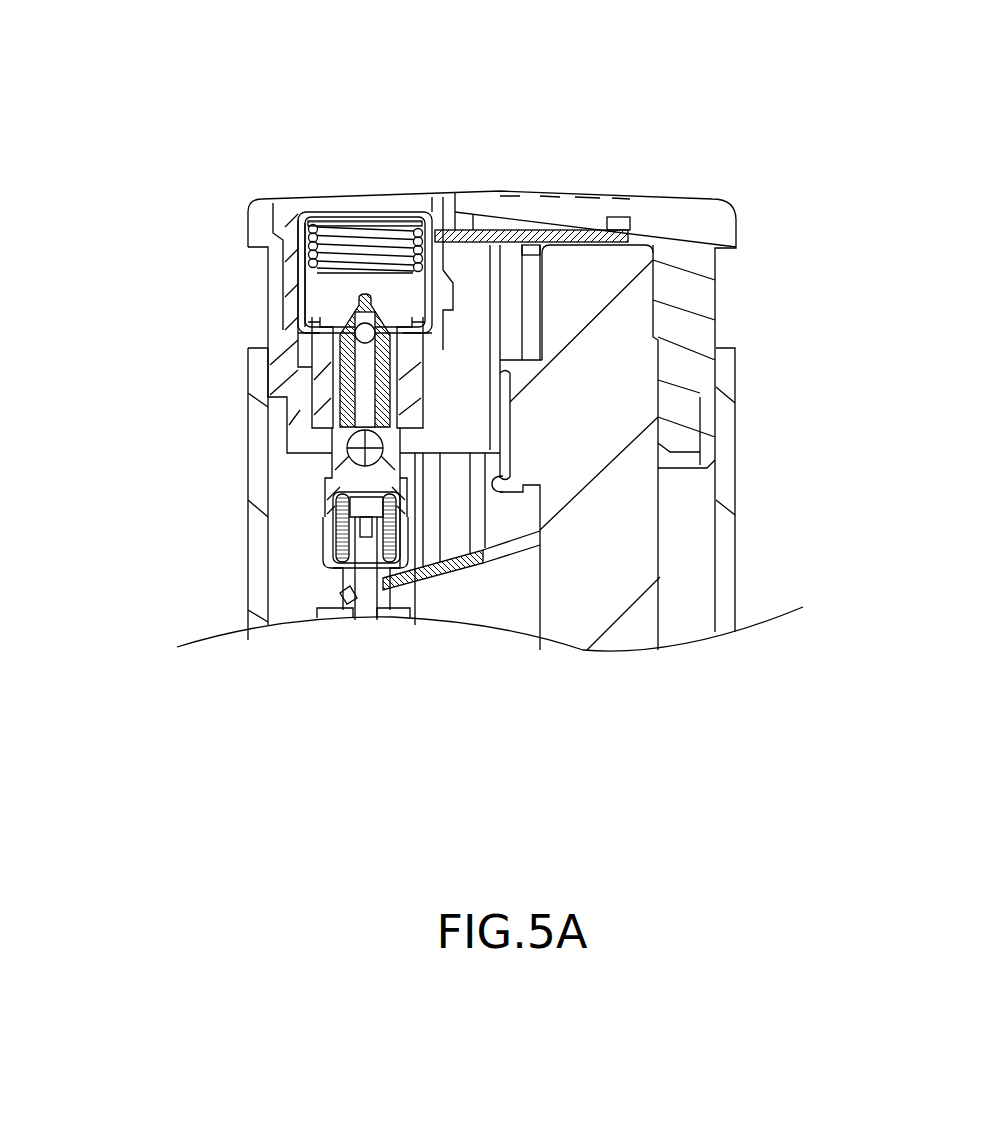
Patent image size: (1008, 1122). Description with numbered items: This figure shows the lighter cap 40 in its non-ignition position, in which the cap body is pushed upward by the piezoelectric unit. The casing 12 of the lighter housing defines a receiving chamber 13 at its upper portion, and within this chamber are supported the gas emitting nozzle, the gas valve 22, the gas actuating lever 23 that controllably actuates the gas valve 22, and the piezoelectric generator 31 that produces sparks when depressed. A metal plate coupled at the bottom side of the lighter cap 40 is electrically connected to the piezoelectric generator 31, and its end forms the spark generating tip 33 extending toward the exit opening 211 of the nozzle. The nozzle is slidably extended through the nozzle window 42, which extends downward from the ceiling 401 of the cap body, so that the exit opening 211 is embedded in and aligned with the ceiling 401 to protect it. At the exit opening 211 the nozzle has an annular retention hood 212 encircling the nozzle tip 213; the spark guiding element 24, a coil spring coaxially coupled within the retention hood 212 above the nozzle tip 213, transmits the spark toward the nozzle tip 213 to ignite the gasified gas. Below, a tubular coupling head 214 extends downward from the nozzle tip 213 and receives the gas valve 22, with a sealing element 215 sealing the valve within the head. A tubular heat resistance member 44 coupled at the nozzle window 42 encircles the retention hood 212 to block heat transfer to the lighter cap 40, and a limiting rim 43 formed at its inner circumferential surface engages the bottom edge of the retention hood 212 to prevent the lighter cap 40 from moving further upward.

The casing 12 is at (723, 552).
The receiving chamber 13 is at (683, 598).
The gas valve 22 is at (365, 578).
The gas actuating lever 23 is at (452, 577).
The spark guiding element 24 is at (355, 263).
The piezoelectric generator 31 is at (613, 363).
The spark generating tip 33 is at (556, 228).
The lighter cap 40 is at (715, 218).
The nozzle window 42 is at (268, 190).
The limiting rim 43 is at (280, 374).
The heat resistance member 44 is at (310, 380).
The exit opening 211 is at (380, 188).
The retention hood 212 is at (302, 243).
The nozzle tip 213 is at (364, 300).
The coupling head 214 is at (330, 508).
The sealing element 215 is at (340, 544).
The ceiling 401 is at (656, 190).